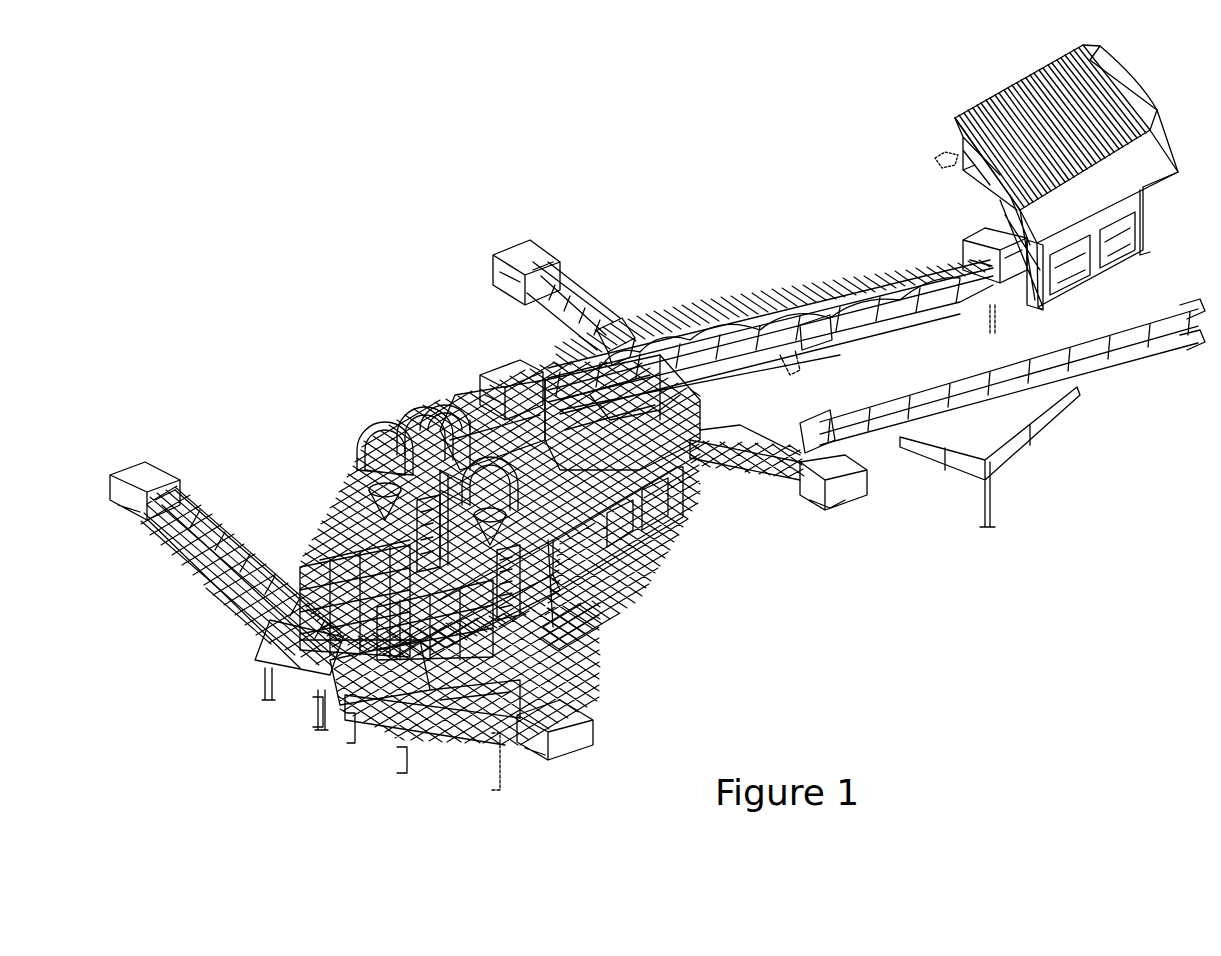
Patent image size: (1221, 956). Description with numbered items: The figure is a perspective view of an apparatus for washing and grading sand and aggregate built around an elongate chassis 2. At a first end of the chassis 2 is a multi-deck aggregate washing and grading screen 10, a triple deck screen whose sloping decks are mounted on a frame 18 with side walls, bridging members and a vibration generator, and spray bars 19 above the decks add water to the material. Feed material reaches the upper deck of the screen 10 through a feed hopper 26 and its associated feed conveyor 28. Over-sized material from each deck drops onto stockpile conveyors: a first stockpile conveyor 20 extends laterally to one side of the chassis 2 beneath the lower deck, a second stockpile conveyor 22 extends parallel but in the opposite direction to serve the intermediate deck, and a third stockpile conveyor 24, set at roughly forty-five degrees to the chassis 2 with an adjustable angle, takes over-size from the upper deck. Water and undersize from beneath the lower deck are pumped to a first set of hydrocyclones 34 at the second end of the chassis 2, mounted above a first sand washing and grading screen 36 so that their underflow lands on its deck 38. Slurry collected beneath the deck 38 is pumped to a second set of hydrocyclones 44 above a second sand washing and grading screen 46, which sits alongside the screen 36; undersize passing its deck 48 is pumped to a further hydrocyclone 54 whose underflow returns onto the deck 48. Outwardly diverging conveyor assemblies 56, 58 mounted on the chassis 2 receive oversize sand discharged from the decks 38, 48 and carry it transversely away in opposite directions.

The chassis 2 is at (665, 523).
The multi-deck aggregate washing and grading screen 10 is at (473, 420).
The frame 18 is at (635, 420).
The spray bars 19 is at (580, 430).
The first stockpile conveyor 20 is at (767, 483).
The second stockpile conveyor 22 is at (563, 363).
The third stockpile conveyor 24 is at (1047, 383).
The feed hopper 26 is at (1120, 222).
The feed conveyor 28 is at (830, 310).
The first set of hydrocyclones 34 is at (367, 470).
The first sand washing and grading screen 36 is at (330, 557).
The deck of the first sand washing and grading screen 38 is at (320, 600).
The second set of hydrocyclones 44 is at (470, 417).
The second sand washing and grading screen 46 is at (415, 675).
The deck of the second sand washing and grading screen 48 is at (432, 670).
The further hydrocyclone 54 is at (610, 587).
The conveyor assembly 56 is at (217, 602).
The conveyor assembly 58 is at (500, 740).